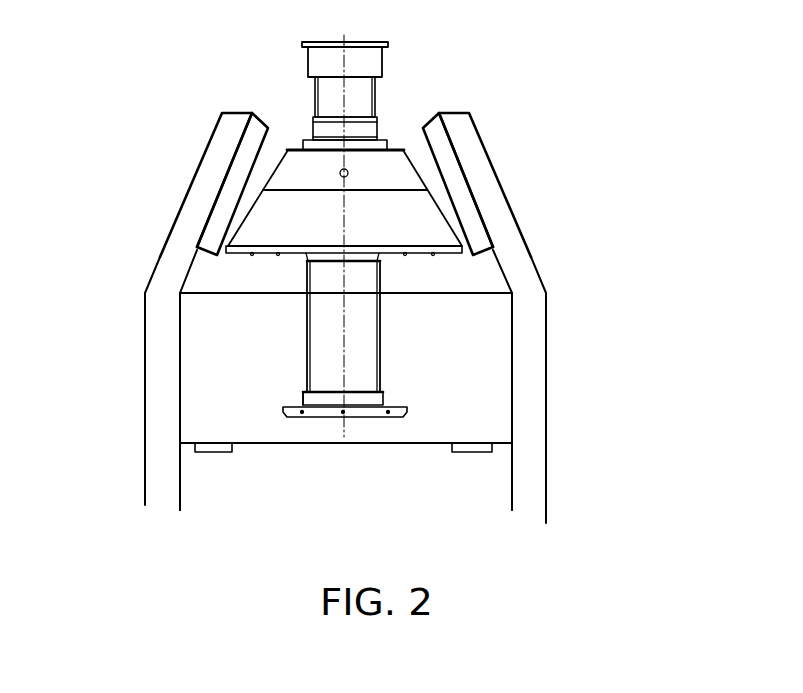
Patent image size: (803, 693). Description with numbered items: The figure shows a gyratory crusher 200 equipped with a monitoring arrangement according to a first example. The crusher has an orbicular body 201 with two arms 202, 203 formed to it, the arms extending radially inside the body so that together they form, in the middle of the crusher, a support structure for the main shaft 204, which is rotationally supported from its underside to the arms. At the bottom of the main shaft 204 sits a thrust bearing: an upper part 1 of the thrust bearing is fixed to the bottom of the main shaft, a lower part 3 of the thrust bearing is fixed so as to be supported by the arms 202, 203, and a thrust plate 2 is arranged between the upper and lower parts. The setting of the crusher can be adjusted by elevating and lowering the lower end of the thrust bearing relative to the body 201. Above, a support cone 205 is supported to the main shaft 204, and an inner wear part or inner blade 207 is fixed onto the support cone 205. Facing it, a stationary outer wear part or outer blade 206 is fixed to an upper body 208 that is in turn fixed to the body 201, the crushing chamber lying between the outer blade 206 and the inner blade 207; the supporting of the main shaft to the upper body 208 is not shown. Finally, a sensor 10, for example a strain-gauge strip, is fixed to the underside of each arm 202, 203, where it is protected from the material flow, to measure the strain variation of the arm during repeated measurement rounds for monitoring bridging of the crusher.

The gyratory crusher 200 is at (703, 58).
The orbicular body 201 is at (524, 318).
The arm 202 is at (342, 306).
The arm 203 is at (423, 401).
The main shaft 204 is at (379, 322).
The support cone 205 is at (370, 149).
The inner wear part 207 is at (344, 177).
The outer wear part 206 is at (424, 184).
The upper body 208 is at (367, 180).
The upper part of thrust bearing 1 is at (303, 392).
The thrust plate 2 is at (295, 385).
The lower part of thrust bearing 3 is at (312, 413).
The sensor 10 is at (343, 487).